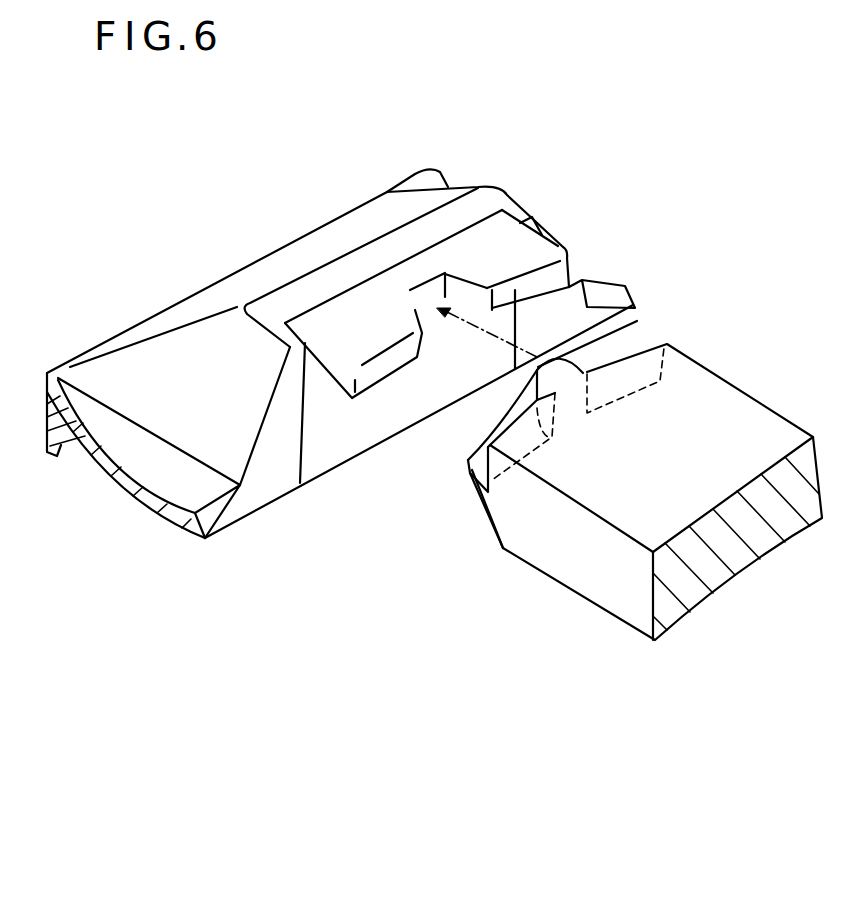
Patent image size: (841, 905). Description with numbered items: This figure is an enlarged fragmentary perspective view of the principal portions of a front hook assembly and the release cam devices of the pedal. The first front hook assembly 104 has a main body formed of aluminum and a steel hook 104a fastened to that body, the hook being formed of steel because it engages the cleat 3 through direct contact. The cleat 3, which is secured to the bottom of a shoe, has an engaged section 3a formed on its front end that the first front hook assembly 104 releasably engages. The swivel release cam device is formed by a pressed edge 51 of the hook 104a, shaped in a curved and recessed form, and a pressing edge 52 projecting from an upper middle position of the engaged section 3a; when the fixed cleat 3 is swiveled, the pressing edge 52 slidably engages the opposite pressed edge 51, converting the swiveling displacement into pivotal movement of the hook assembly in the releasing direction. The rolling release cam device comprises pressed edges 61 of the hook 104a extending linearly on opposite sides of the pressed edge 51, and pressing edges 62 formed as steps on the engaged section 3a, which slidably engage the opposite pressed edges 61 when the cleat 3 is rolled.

The first front hook assembly 104 is at (163, 423).
The steel hook 104a is at (318, 313).
The pressed edge 51 is at (448, 283).
The pressed edges 61 is at (553, 263).
The pressing edge 52 is at (550, 367).
The cleat 3 is at (727, 418).
The engaged section 3a is at (495, 418).
The pressing edges 62 is at (473, 475).